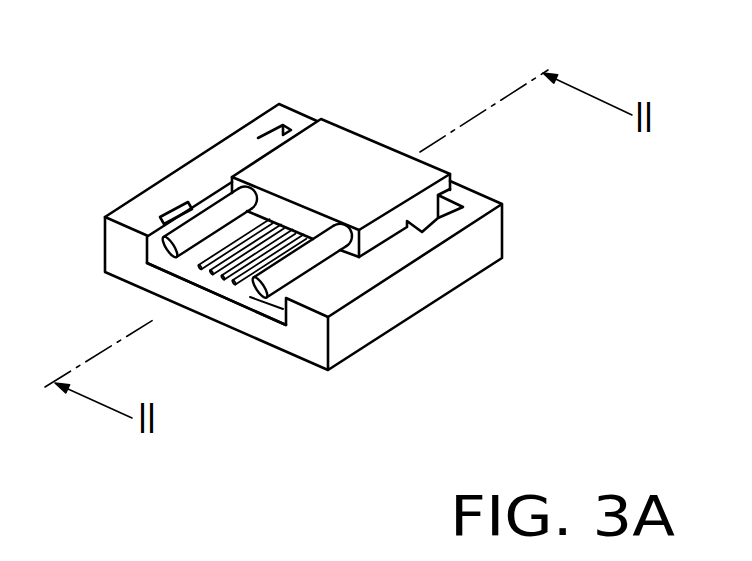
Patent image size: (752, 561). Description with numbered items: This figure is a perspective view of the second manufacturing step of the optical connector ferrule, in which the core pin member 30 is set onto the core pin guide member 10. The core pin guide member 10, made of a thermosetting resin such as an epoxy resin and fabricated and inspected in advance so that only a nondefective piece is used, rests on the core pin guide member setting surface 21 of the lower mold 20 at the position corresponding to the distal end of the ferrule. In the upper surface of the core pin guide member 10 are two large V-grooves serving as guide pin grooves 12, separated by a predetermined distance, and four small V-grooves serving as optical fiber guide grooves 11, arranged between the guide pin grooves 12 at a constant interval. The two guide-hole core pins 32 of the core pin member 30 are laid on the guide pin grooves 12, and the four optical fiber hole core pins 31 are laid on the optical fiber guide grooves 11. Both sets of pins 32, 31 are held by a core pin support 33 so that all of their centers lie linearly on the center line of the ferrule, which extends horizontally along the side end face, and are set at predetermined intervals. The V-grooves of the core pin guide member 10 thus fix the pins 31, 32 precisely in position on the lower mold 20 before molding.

The core pin guide member 10 is at (278, 307).
The optical fiber guide grooves 11 is at (228, 277).
The guide pin grooves 12 is at (170, 258).
The lower mold 20 is at (505, 229).
The core pin guide member setting surface 21 is at (202, 288).
The core pin member 30 is at (402, 128).
The optical fiber hole core pins 31 is at (272, 215).
The guide-hole core pins 32 is at (203, 212).
The core pin support 33 is at (346, 143).